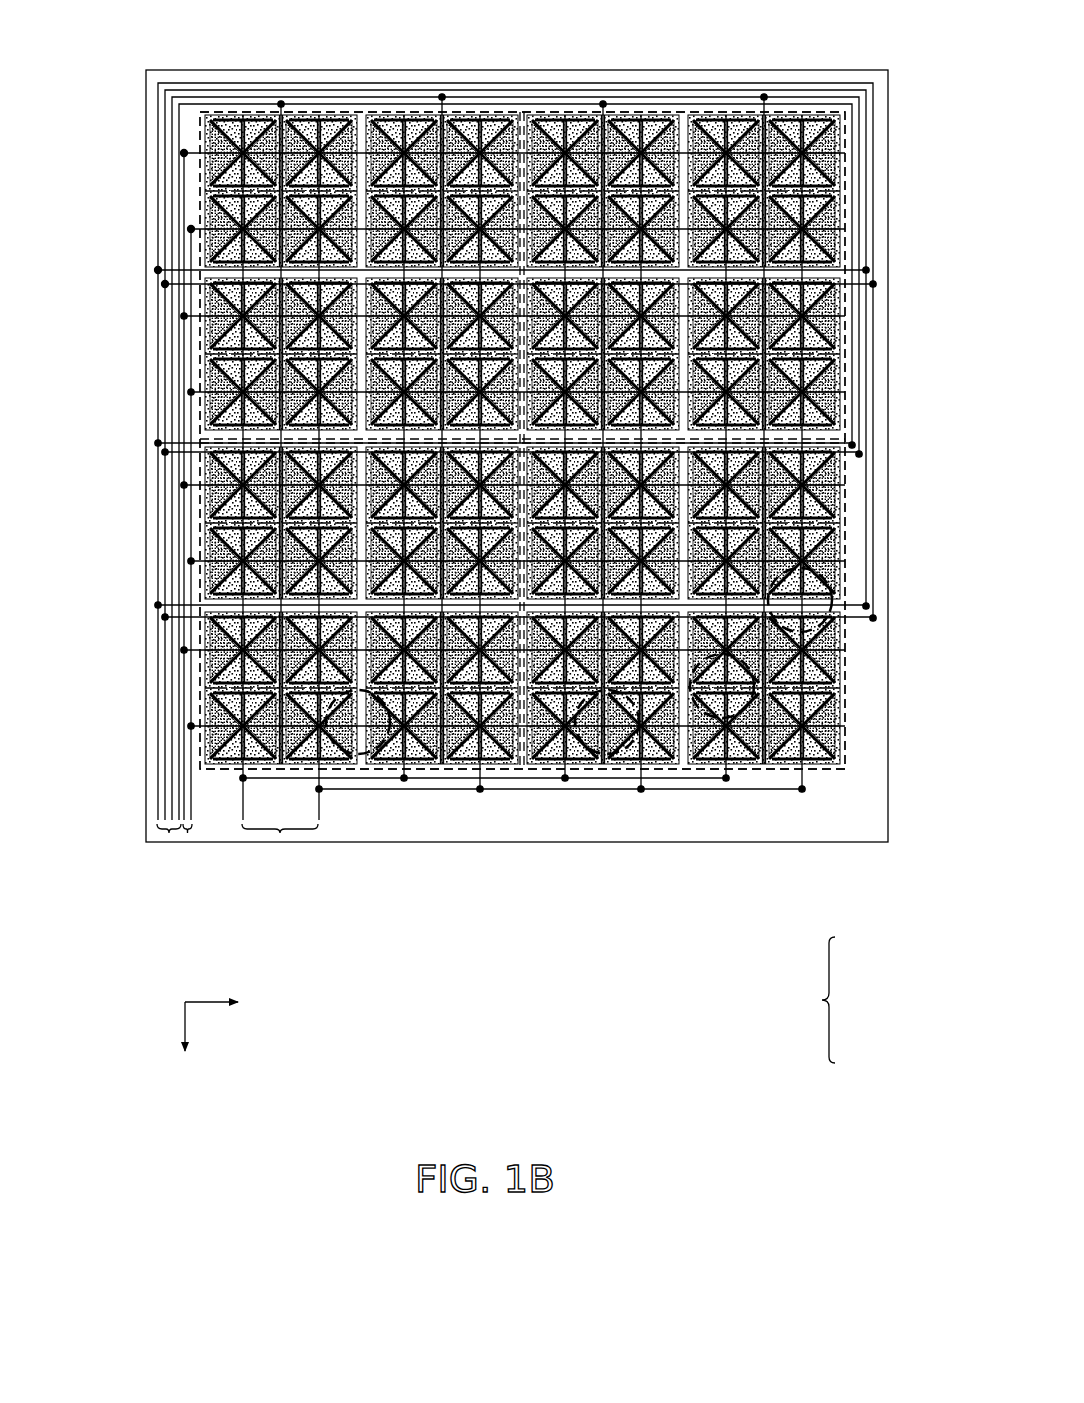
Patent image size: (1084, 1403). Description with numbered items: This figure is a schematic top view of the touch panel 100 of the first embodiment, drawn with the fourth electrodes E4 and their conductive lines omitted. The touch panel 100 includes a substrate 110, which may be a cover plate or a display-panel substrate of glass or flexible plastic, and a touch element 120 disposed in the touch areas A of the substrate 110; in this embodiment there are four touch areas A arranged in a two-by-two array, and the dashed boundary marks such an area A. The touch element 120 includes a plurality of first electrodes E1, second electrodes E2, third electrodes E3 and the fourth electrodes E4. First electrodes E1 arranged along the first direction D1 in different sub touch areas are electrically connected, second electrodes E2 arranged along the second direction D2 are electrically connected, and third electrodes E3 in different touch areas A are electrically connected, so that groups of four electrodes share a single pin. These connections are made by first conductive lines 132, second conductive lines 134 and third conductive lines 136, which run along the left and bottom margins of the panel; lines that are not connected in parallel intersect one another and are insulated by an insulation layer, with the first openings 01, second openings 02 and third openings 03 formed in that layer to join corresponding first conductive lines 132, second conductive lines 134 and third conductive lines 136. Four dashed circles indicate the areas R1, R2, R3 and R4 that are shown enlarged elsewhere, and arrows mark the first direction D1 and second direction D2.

The touch panel 100 is at (813, 1158).
The substrate 110 is at (176, 76).
The touch element 120 is at (827, 1003).
The first electrodes E1 is at (840, 157).
The second electrodes E2 is at (803, 127).
The third electrodes E3 is at (835, 127).
The fourth electrodes E4 is at (708, 110).
The touch areas A is at (522, 390).
The first openings 01 is at (187, 228).
The second openings 02 is at (478, 793).
The third openings 03 is at (168, 281).
The first conductive lines 132 is at (188, 836).
The second conductive lines 134 is at (281, 836).
The third conductive lines 136 is at (168, 836).
The area R1 is at (598, 756).
The area R2 is at (348, 756).
The area R3 is at (745, 714).
The area R4 is at (828, 622).
The first direction D1 is at (185, 1047).
The second direction D2 is at (229, 1002).